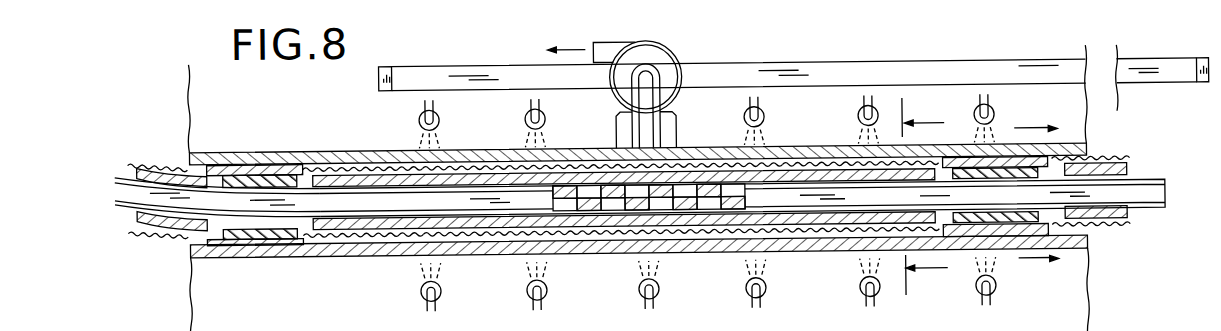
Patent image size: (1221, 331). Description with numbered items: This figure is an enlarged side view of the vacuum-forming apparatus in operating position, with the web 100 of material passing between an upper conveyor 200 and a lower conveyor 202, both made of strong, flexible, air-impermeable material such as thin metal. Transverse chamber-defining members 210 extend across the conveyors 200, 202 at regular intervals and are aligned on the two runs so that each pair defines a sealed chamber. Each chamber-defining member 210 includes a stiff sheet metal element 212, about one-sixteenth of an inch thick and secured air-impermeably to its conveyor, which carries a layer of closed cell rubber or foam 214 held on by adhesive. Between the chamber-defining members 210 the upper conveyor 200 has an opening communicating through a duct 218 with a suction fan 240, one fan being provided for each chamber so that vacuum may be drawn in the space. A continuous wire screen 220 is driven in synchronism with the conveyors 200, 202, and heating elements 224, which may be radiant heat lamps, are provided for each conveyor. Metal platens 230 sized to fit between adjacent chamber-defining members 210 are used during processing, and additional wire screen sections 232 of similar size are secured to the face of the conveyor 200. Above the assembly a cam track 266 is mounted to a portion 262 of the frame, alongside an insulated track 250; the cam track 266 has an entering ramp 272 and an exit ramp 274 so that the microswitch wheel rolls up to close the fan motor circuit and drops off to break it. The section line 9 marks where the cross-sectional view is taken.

The section line 9- 9 is at (980, 198).
The web 100 is at (1172, 178).
The conveyor 200 is at (825, 145).
The conveyor 202 is at (583, 256).
The chamber-defining member 210 is at (192, 241).
The sheet metal element 212 is at (233, 161).
The layer of closed cell rubber or foam 214 is at (282, 171).
The duct 218 is at (650, 128).
The wire screen 220 is at (715, 238).
The heating element 224 is at (525, 118).
The metal platen 230 is at (373, 171).
The wire screen section 232 is at (578, 182).
The suction fan 240 is at (670, 49).
The insulated track 250 is at (1120, 323).
The frame portion 262 is at (1178, 322).
The cam track 266 is at (848, 76).
The entering ramp 272 is at (377, 77).
The exit ramp 274 is at (1203, 90).